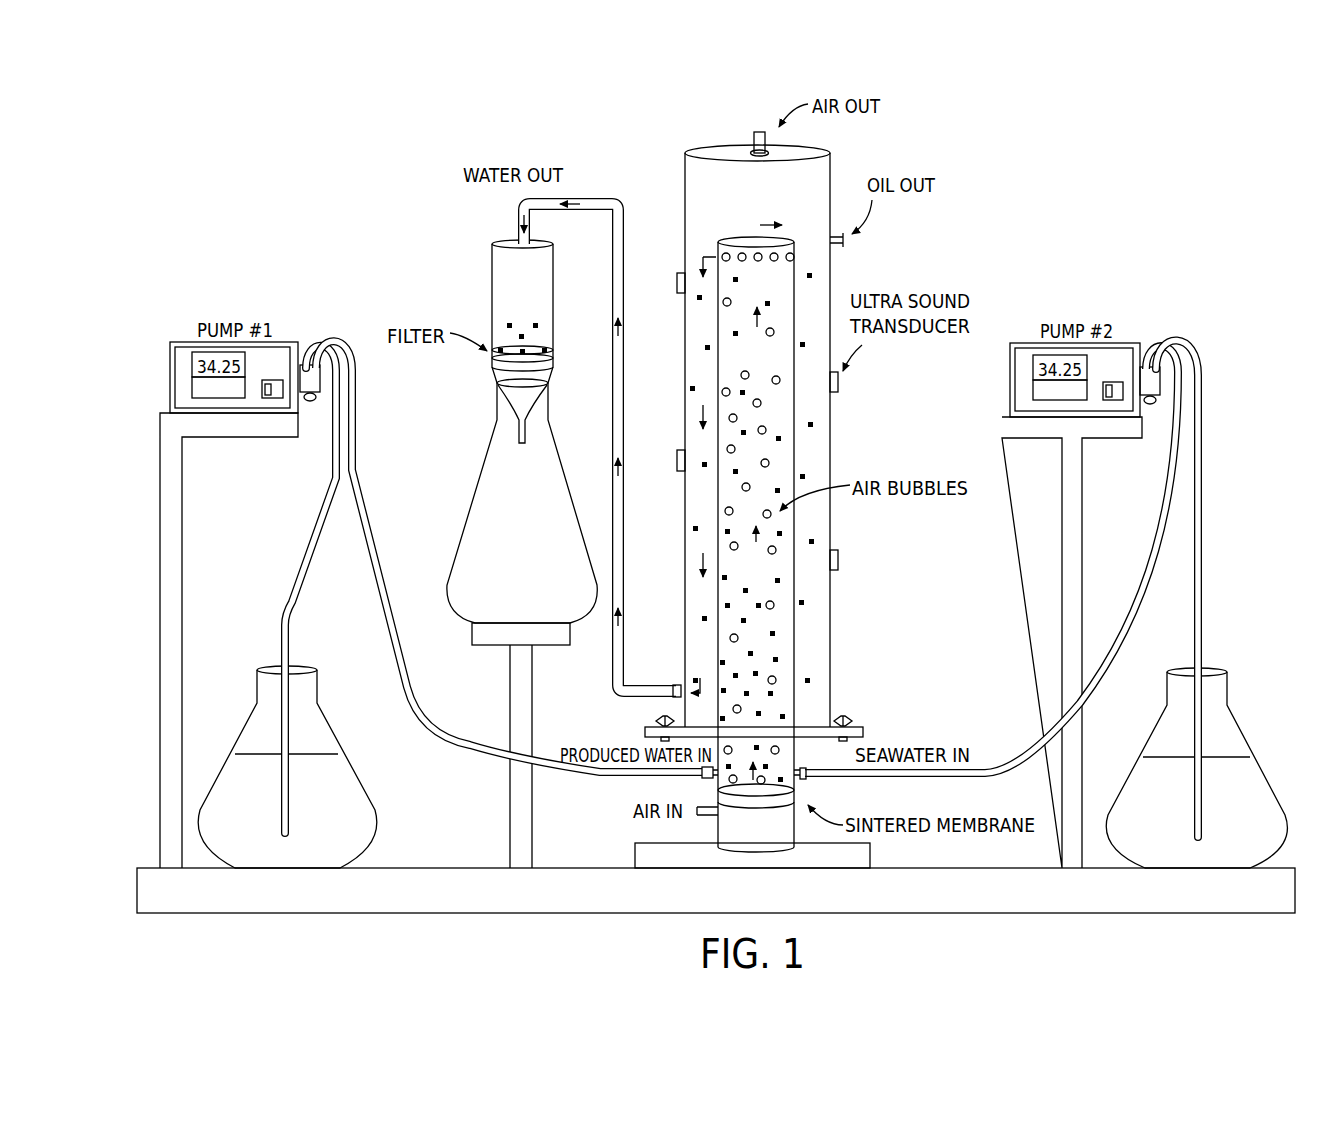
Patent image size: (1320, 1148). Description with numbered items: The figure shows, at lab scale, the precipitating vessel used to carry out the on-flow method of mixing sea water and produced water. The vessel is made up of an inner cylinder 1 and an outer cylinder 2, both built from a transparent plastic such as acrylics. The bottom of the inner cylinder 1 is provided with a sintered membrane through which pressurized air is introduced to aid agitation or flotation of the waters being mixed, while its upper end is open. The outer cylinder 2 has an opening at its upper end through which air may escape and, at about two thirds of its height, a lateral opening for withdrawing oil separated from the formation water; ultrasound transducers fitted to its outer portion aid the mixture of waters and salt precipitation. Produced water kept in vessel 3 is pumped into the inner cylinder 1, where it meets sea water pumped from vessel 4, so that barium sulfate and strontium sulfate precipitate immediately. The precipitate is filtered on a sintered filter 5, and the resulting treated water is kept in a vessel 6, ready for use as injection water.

The inner cylinder 1 is at (780, 292).
The outer cylinder 2 is at (814, 194).
The vessel 3 is at (236, 830).
The vessel 4 is at (1157, 835).
The sintered filter 5 is at (581, 379).
The vessel 6 is at (520, 566).